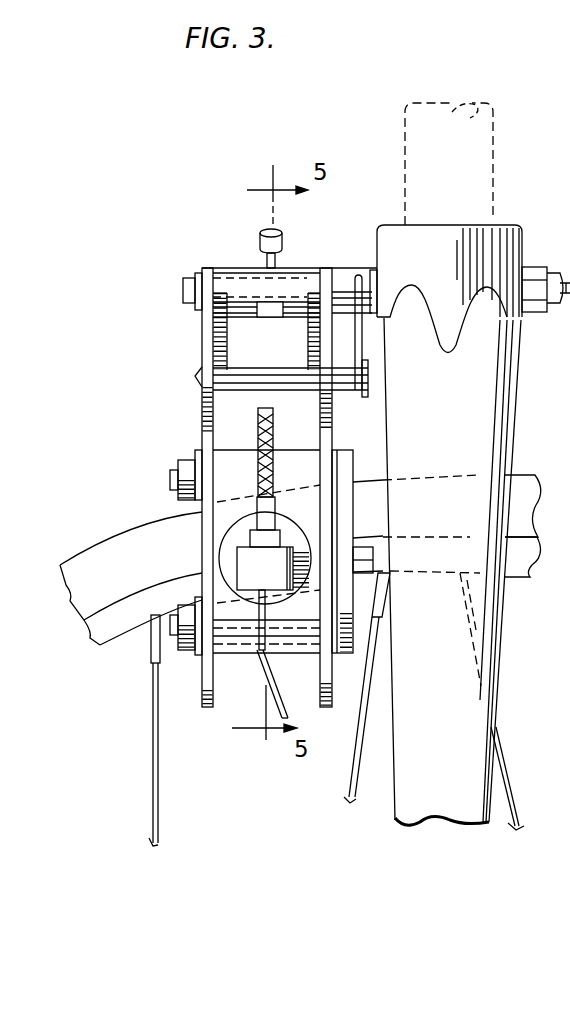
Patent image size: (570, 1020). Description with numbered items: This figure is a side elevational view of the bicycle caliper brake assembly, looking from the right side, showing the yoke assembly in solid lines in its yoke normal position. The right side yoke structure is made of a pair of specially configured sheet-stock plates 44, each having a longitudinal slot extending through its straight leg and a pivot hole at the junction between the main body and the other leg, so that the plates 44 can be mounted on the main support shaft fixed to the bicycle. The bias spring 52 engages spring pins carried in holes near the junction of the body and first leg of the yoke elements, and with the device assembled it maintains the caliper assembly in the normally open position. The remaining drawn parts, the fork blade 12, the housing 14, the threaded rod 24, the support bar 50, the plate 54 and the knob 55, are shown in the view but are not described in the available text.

The fork blade / tube 12 is at (452, 434).
The fork crown housing 14 is at (451, 266).
The threaded adjusting rod 24 is at (258, 430).
The yoke plates 44 is at (202, 693).
The support bar 50 is at (253, 372).
The bias spring 52 is at (357, 333).
The clamp plate 54 is at (368, 377).
The knob 55 is at (247, 268).